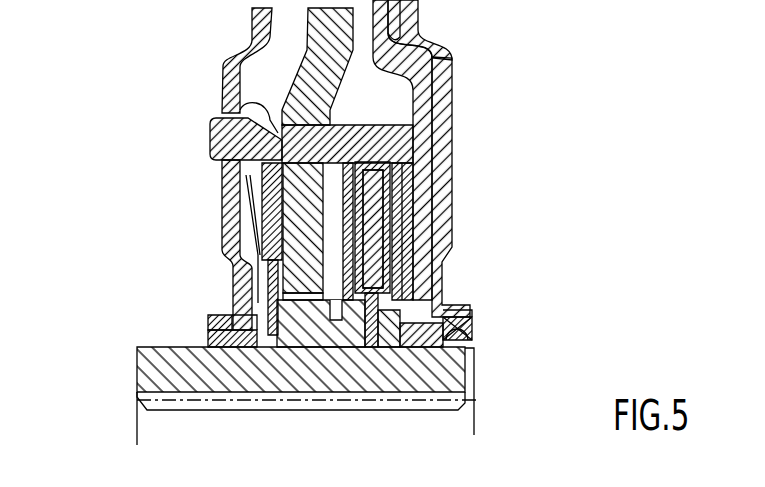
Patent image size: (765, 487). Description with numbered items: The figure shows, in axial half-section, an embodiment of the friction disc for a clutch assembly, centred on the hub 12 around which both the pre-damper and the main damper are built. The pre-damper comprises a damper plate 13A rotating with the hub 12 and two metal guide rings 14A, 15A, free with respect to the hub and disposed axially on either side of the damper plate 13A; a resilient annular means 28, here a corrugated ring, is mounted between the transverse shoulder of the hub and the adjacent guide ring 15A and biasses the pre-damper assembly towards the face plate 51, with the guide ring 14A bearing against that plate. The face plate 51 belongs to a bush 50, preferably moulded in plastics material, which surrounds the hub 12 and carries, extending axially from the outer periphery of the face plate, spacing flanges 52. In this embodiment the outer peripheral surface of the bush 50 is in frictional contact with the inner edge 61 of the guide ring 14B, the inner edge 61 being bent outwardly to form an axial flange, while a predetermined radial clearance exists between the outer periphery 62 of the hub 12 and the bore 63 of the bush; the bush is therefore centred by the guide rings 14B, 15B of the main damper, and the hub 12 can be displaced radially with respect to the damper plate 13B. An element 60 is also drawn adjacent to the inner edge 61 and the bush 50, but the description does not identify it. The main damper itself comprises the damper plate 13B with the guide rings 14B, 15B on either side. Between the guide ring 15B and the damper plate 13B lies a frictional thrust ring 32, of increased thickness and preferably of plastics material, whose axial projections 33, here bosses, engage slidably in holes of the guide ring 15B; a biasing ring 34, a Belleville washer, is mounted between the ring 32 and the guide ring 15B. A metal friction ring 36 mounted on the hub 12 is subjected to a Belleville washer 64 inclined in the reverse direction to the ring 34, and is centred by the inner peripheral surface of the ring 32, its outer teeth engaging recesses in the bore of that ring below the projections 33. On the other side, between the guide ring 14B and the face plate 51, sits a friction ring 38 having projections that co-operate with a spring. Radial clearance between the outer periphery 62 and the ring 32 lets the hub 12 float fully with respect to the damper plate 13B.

The hub 12 is at (160, 372).
The damper plate 13A is at (358, 348).
The damper plate 13B is at (252, 38).
The guide ring 14A is at (415, 188).
The guide ring 14B is at (445, 145).
The guide ring 15A is at (343, 210).
The guide ring 15B is at (228, 78).
The resilient annular means 28 is at (305, 303).
The frictional thrust ring 32 is at (228, 103).
The axial projections 33 is at (210, 147).
The biasing ring 34 is at (222, 261).
The friction ring 36 is at (277, 347).
The friction ring 38 is at (440, 36).
The bush 50 is at (474, 367).
The face plate 51 is at (428, 238).
The spacing flanges 52 is at (380, 113).
The sealing ring 60 is at (470, 330).
The inner edge 61 is at (470, 317).
The outer periphery 62 is at (410, 348).
The bore 63 is at (447, 350).
The Belleville washer 64 is at (240, 303).